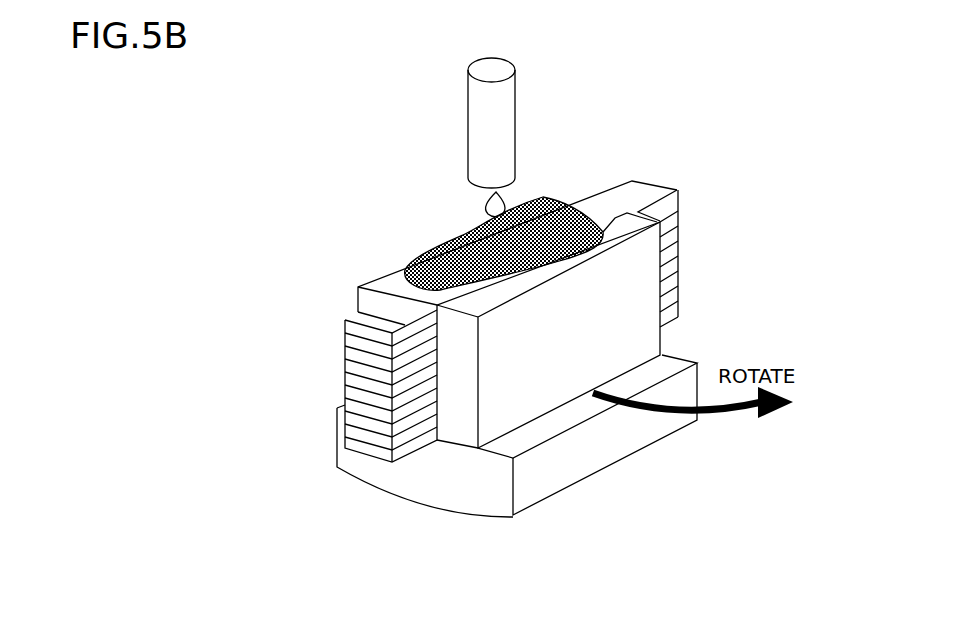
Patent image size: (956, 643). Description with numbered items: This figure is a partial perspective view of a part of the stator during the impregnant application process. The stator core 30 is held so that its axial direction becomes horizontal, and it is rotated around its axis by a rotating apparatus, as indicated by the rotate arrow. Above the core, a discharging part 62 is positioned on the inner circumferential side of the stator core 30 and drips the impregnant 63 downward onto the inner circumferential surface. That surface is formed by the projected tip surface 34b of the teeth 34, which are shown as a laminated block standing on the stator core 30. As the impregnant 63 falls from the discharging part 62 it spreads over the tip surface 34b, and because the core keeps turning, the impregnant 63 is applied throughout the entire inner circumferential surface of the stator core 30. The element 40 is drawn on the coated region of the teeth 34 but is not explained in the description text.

The stator core 30 is at (617, 442).
The teeth 34 is at (620, 287).
The projected tip surface 34b is at (425, 300).
The top plate / cladding layer 40 is at (613, 197).
The discharging part 62 is at (467, 117).
The impregnant 63 is at (485, 205).